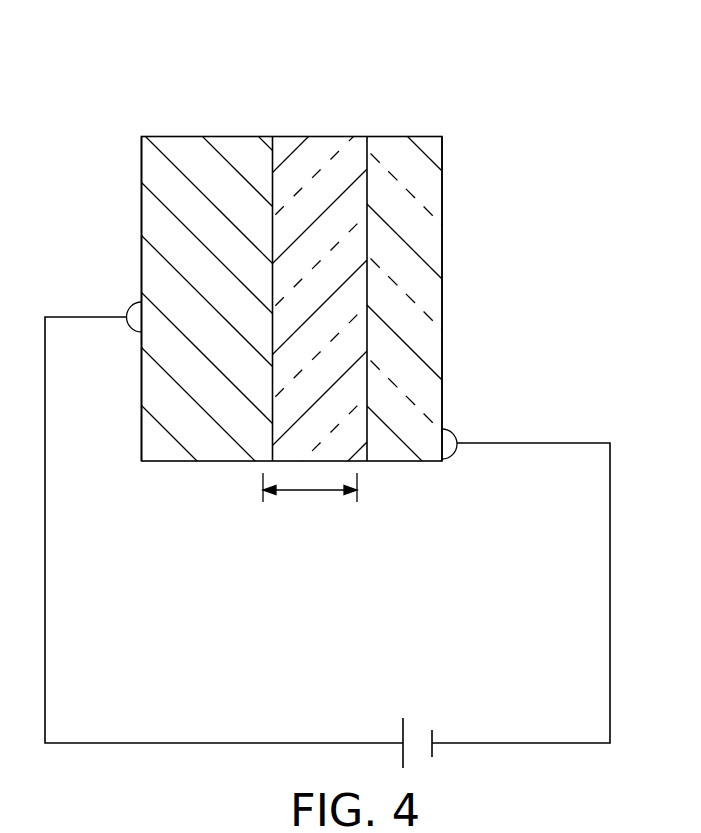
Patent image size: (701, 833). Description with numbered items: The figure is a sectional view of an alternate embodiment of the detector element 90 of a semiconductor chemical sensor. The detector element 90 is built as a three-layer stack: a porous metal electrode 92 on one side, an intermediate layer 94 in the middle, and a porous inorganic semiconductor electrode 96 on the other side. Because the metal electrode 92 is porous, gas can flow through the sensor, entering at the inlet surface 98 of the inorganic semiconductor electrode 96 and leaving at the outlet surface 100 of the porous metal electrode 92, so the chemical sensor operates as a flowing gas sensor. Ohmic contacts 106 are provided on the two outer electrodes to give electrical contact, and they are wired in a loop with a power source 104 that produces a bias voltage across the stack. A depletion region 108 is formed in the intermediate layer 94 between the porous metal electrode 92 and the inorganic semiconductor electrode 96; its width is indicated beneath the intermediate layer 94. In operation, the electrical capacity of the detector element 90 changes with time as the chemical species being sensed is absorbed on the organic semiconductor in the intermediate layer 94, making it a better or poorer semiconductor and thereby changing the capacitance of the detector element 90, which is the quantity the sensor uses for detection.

The detector element 90 is at (413, 102).
The porous metal electrode 92 is at (160, 133).
The intermediate layer 94 is at (303, 131).
The porous inorganic semiconductor electrode 96 is at (448, 170).
The inlet surface 98 is at (443, 253).
The outlet surface 100 is at (141, 222).
The power source 104 is at (416, 738).
The ohmic contacts 106 is at (128, 333).
The depletion region 108 is at (310, 503).